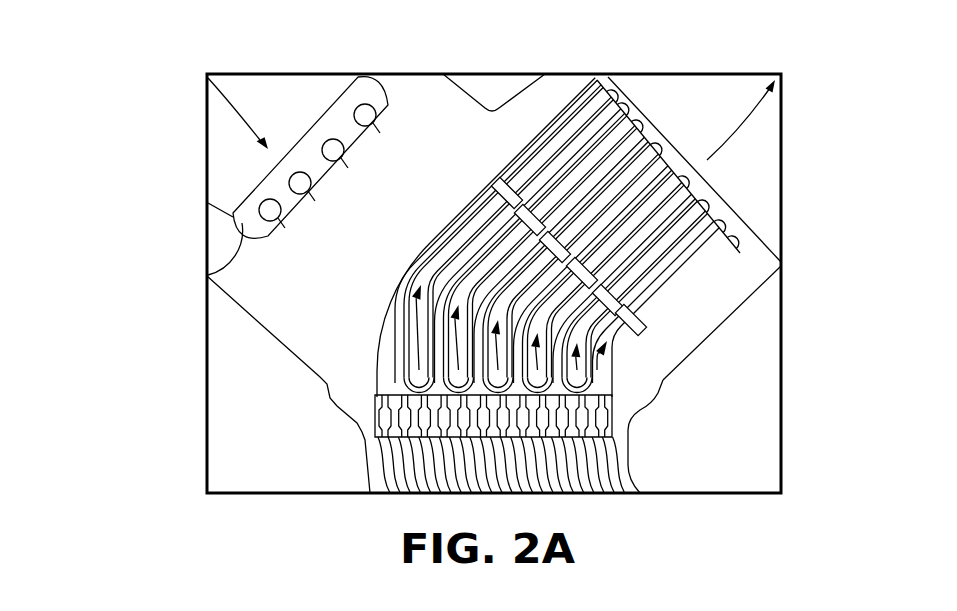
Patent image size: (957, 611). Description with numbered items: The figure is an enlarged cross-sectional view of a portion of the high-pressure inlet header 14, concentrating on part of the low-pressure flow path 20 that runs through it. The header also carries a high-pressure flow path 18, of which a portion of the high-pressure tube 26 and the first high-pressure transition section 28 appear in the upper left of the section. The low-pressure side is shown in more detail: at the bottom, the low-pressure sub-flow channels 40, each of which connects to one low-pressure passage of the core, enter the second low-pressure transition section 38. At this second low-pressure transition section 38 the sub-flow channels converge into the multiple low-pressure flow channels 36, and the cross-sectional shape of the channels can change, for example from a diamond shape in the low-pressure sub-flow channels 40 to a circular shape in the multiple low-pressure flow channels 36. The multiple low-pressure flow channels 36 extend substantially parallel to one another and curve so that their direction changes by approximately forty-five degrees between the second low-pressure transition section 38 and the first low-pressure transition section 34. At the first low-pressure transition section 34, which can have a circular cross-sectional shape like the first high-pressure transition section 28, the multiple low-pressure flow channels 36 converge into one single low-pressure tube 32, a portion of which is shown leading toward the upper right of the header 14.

The high-pressure inlet header 14 is at (126, 228).
The high-pressure flow path 18 is at (238, 112).
The low-pressure flow path 20 is at (753, 115).
The high-pressure tube 26 is at (222, 170).
The first high-pressure transition section 28 is at (206, 277).
The low-pressure tube 32 is at (770, 168).
The first low-pressure transition section 34 is at (777, 246).
The multiple low-pressure flow channels 36 is at (682, 292).
The second low-pressure transition section 38 is at (613, 393).
The low-pressure sub-flow channels 40 is at (623, 465).